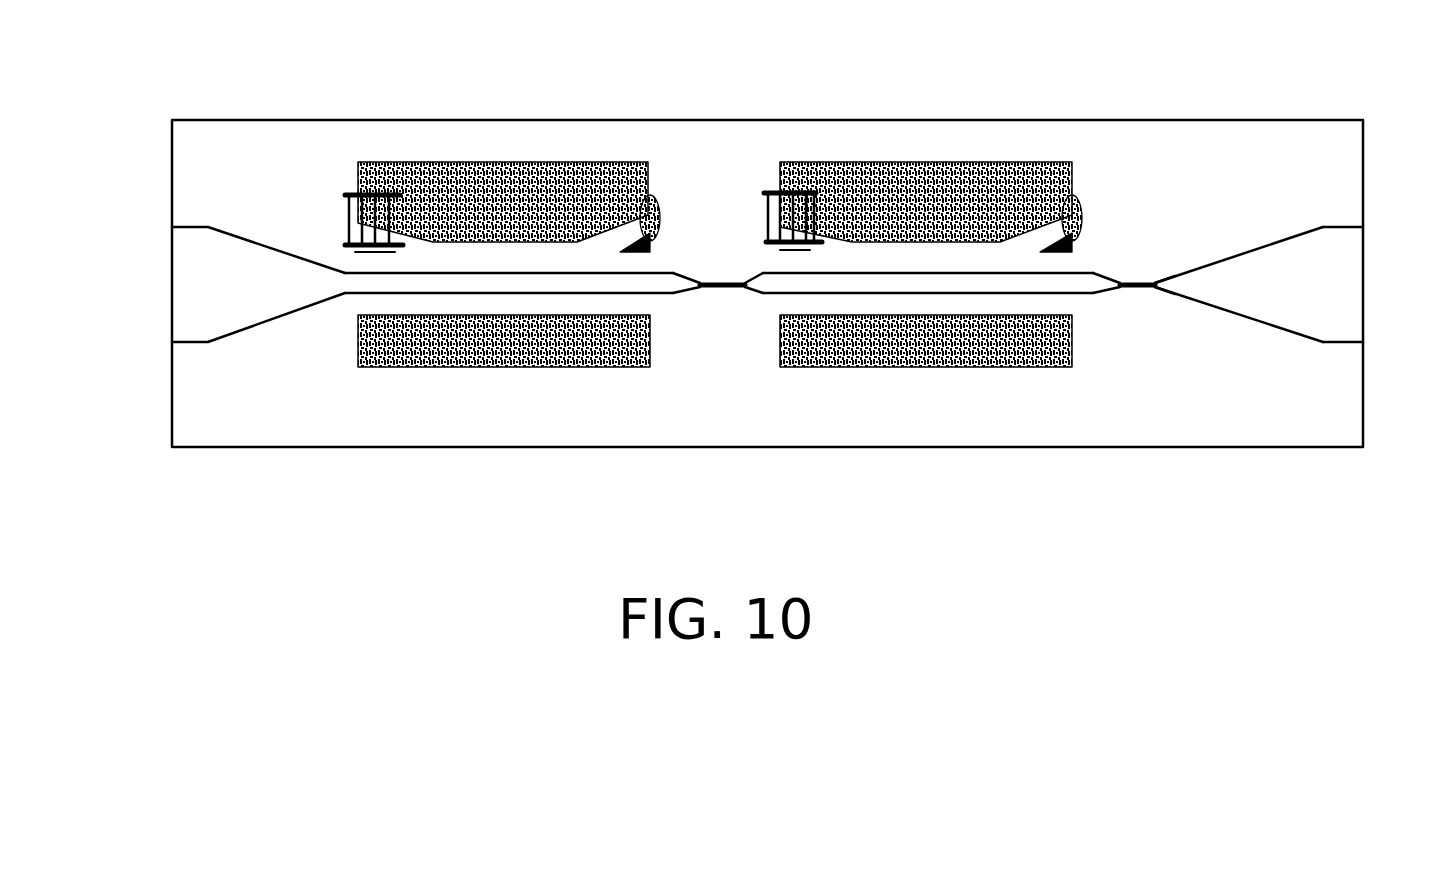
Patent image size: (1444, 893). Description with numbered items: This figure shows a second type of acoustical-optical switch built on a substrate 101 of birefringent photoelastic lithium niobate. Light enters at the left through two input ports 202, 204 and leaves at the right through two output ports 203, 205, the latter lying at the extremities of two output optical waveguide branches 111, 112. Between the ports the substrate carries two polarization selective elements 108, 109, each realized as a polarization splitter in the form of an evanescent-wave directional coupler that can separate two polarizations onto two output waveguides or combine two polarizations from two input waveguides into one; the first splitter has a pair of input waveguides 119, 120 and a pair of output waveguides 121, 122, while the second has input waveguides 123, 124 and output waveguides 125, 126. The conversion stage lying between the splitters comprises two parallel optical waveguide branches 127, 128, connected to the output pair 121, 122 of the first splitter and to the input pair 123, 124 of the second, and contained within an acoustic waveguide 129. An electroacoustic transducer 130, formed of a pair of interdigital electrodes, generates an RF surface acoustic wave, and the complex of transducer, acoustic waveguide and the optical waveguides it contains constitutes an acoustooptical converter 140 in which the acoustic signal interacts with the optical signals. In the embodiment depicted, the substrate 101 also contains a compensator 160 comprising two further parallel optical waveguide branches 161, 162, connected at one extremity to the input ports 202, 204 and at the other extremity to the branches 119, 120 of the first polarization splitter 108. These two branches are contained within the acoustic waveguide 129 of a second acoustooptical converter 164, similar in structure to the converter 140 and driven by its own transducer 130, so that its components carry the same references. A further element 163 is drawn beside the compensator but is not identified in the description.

The substrate 101 is at (1173, 140).
The polarization selective element 108 is at (718, 266).
The polarization selective element 109 is at (1140, 302).
The output optical waveguide branch 111 is at (1248, 240).
The output optical waveguide branch 112 is at (1262, 325).
The input optical waveguide 119 is at (692, 278).
The input optical waveguide 120 is at (696, 290).
The output optical waveguide 121 is at (760, 278).
The output optical waveguide 122 is at (750, 290).
The input optical waveguide 123 is at (1117, 278).
The input optical waveguide 124 is at (1116, 290).
The output optical waveguide 125 is at (1168, 278).
The output optical waveguide 126 is at (1162, 292).
The optical waveguide branch 127 is at (980, 275).
The optical waveguide branch 128 is at (1040, 295).
The acoustic waveguide 129 is at (857, 303).
The electroacoustic transducer 130 is at (340, 203).
The acoustooptical converter 140 is at (898, 355).
The compensator 160 is at (498, 143).
The optical waveguide branch 161 is at (400, 278).
The optical waveguide branch 162 is at (613, 295).
The lower block 163 is at (488, 307).
The acoustooptical converter 164 is at (428, 338).
The input port 202 is at (165, 226).
The output port 203 is at (1365, 226).
The input port 204 is at (168, 341).
The output port 205 is at (1366, 345).